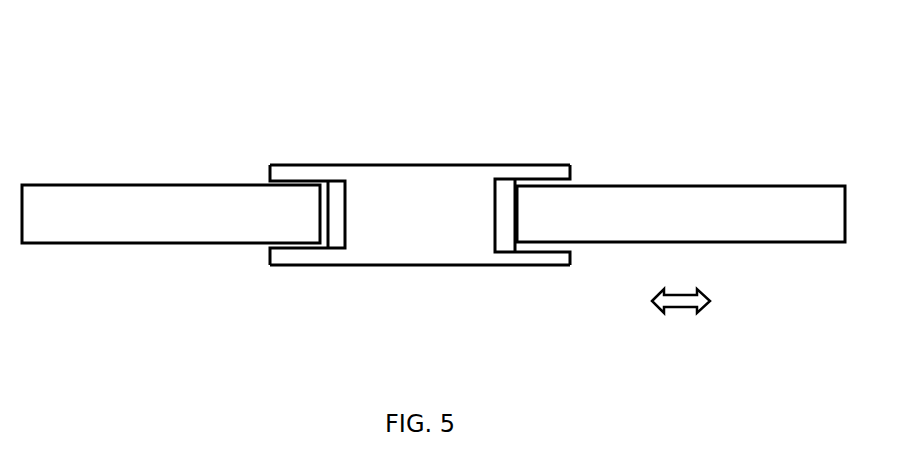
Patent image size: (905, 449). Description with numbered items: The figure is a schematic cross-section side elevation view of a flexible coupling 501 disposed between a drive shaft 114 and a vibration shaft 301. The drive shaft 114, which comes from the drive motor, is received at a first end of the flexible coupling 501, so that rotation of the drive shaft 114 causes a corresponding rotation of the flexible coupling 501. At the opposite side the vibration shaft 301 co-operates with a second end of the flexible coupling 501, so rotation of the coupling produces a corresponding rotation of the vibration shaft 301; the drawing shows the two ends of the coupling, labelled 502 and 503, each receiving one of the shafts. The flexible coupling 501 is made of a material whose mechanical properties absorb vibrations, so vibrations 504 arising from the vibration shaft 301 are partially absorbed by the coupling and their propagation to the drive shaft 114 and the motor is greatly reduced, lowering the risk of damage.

The drive shaft 114 is at (60, 192).
The vibration shaft 301 is at (673, 190).
The flexible coupling 501 is at (421, 205).
The left clip 502 is at (325, 200).
The right clip 503 is at (507, 198).
The vibrations 504 is at (681, 312).